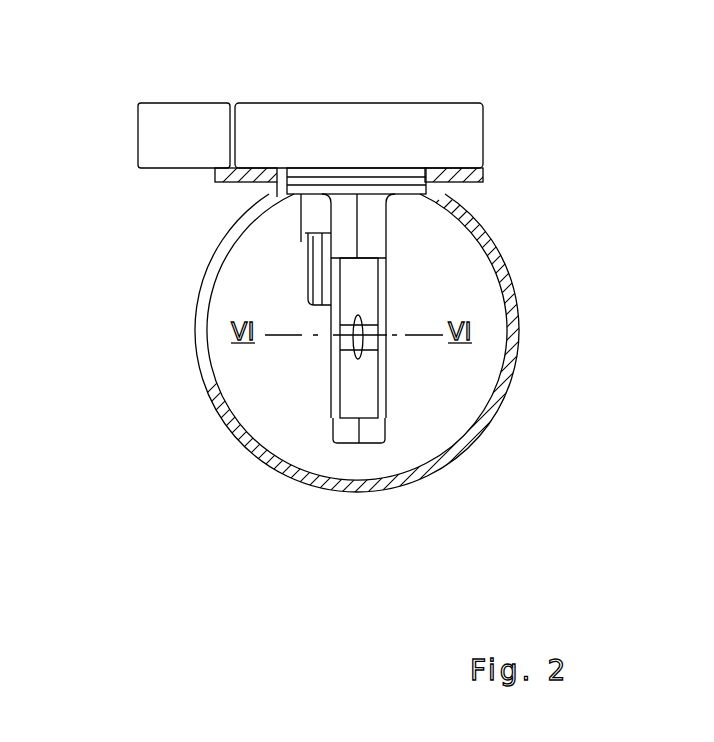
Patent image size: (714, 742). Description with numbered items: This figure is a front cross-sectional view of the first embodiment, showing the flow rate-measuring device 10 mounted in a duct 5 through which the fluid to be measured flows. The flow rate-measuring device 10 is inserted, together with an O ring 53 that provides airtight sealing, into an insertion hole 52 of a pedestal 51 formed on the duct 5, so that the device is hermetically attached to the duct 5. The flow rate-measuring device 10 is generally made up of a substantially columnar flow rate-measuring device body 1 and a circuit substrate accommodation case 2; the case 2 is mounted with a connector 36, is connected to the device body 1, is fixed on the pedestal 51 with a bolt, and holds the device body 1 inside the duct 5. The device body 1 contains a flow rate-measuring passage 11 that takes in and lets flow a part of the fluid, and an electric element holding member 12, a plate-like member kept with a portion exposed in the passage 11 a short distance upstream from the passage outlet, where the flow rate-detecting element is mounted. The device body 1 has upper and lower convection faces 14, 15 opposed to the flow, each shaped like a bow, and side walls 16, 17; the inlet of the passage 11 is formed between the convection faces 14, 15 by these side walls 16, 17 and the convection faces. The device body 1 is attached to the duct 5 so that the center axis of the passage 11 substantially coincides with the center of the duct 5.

The flow rate-measuring device body 1 is at (360, 307).
The circuit substrate accommodation case 2 is at (293, 142).
The duct 5 is at (440, 460).
The flow rate-measuring device 10 is at (427, 124).
The flow rate-measuring passage 11 is at (363, 293).
The electric element holding member 12 is at (365, 355).
The upper convection face 14 is at (348, 219).
The lower convection face 15 is at (367, 430).
The side wall 16 is at (334, 380).
The side wall 17 is at (382, 400).
The connector 36 is at (156, 157).
The pedestal 51 is at (470, 171).
The insertion hole 52 is at (433, 186).
The O ring 53 is at (275, 189).